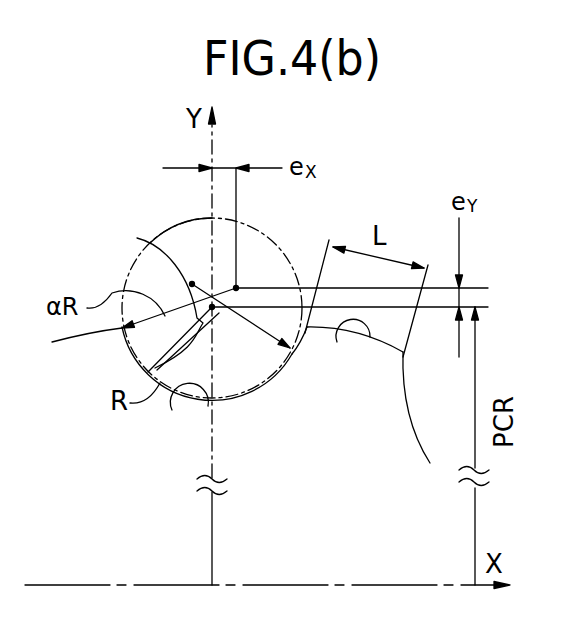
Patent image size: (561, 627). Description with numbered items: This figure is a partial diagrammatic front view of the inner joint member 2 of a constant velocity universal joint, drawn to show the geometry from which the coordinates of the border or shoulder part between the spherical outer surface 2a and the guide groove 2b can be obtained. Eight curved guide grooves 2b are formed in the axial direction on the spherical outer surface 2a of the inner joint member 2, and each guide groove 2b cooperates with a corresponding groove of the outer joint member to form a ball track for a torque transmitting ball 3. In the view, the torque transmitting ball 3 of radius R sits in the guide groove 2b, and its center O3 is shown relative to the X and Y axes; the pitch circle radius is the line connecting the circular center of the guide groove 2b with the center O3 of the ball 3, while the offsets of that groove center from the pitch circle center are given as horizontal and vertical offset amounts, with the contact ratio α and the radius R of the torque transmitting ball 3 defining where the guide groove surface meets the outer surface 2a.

The inner joint member 2 is at (75, 208).
The spherical outer surface 2a is at (355, 347).
The guide groove 2b is at (177, 412).
The torque transmitting ball 3 is at (150, 240).
The center of the torque transmitting ball O3 is at (137, 238).